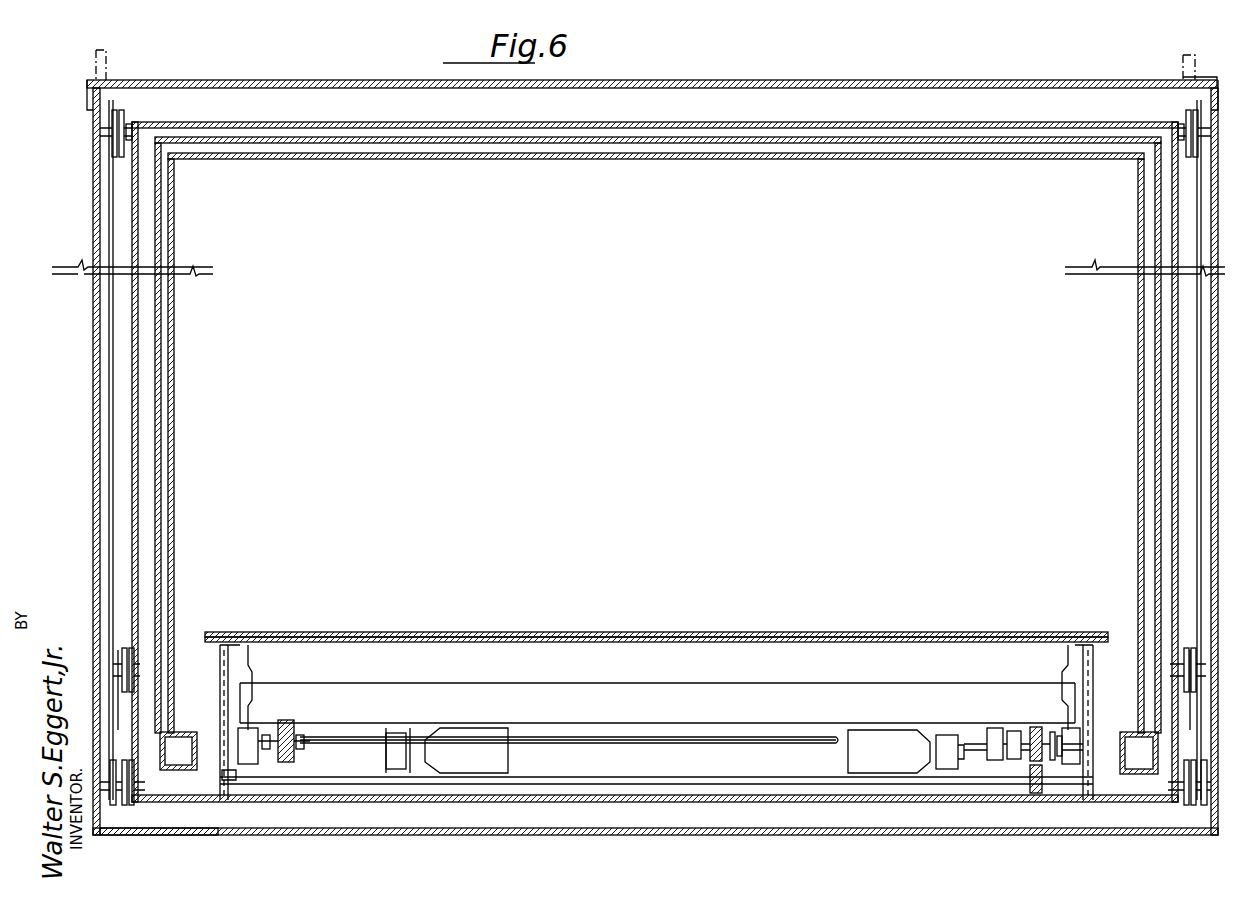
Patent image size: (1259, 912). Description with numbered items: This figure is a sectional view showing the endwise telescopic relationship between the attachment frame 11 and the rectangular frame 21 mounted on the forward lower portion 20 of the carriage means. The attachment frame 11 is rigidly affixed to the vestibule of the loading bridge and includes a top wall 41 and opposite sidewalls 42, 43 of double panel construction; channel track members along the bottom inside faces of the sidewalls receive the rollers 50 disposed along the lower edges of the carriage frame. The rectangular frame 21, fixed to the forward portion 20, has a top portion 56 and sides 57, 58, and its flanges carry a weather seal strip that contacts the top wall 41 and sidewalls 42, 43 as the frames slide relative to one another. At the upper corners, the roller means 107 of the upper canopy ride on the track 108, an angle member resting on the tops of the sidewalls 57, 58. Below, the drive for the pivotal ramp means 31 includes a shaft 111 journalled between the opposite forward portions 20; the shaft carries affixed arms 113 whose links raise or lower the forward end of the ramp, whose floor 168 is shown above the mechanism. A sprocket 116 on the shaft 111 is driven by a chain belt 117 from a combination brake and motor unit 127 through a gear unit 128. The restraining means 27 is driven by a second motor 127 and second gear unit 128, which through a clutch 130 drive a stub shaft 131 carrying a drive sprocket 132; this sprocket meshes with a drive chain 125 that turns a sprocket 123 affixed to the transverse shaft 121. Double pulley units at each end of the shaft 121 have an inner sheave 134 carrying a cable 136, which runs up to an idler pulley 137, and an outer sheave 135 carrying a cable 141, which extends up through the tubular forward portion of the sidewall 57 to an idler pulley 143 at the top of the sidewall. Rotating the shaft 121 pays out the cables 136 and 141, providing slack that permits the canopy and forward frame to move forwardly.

The attachment frame 11 is at (360, 136).
The forward lower portion of the carriage means 20 is at (232, 720).
The rectangular frame 21 is at (692, 102).
The restraining means 27 is at (98, 212).
The pivotal ramp means 31 is at (672, 675).
The top wall 41 is at (586, 158).
The sidewall 42 is at (1156, 362).
The sidewall 43 is at (174, 398).
The rollers 50 is at (229, 780).
The top portion of frame 56 is at (832, 122).
The side of frame 57 is at (1216, 502).
The side of frame 58 is at (134, 380).
The roller means 107 is at (108, 60).
The track 108 is at (118, 78).
The shaft 111 is at (636, 742).
The affixed arms 113 is at (252, 732).
The sprocket 116 is at (292, 740).
The chain belt 117 is at (283, 762).
The transverse shaft 121 is at (672, 795).
The sprocket 123 is at (1057, 770).
The drive chain 125 is at (1032, 782).
The motor unit 127 is at (490, 768).
The gear unit 128 is at (402, 765).
The clutch 130 is at (993, 734).
The stub shaft 131 is at (1013, 740).
The drive sprocket 132 is at (1042, 746).
The inner sheave 134 is at (132, 800).
The outer sheave 135 is at (116, 805).
The cable 136 is at (127, 720).
The idler pulley 137 is at (126, 670).
The cable 141 is at (110, 410).
The idler pulley 143 is at (122, 118).
The floor 168 is at (516, 633).